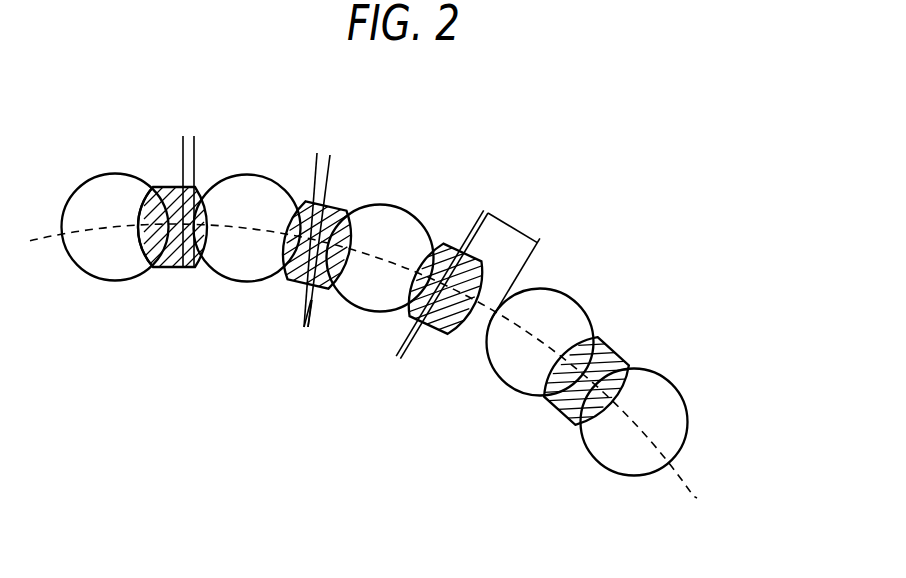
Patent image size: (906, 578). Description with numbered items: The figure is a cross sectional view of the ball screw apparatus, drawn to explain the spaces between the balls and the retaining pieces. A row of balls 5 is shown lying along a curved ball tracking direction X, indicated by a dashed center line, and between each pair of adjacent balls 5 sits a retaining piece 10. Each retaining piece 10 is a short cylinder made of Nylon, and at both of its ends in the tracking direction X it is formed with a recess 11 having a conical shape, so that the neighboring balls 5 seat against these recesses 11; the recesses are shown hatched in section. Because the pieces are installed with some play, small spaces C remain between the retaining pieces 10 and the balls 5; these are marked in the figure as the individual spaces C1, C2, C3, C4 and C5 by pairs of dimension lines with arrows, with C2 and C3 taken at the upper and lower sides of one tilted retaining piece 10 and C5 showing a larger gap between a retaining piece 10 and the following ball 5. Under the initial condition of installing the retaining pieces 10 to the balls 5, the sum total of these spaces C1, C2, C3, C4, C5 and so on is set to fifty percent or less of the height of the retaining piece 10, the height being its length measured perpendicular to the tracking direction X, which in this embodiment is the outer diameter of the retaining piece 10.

The ball 5 is at (113, 273).
The retaining piece 10 is at (180, 268).
The recess 11 is at (167, 222).
The space C1 is at (158, 143).
The space C2 is at (293, 154).
The space C3 is at (272, 318).
The space C4 is at (377, 333).
The space C5 is at (466, 200).
The ball tracking direction X is at (697, 498).